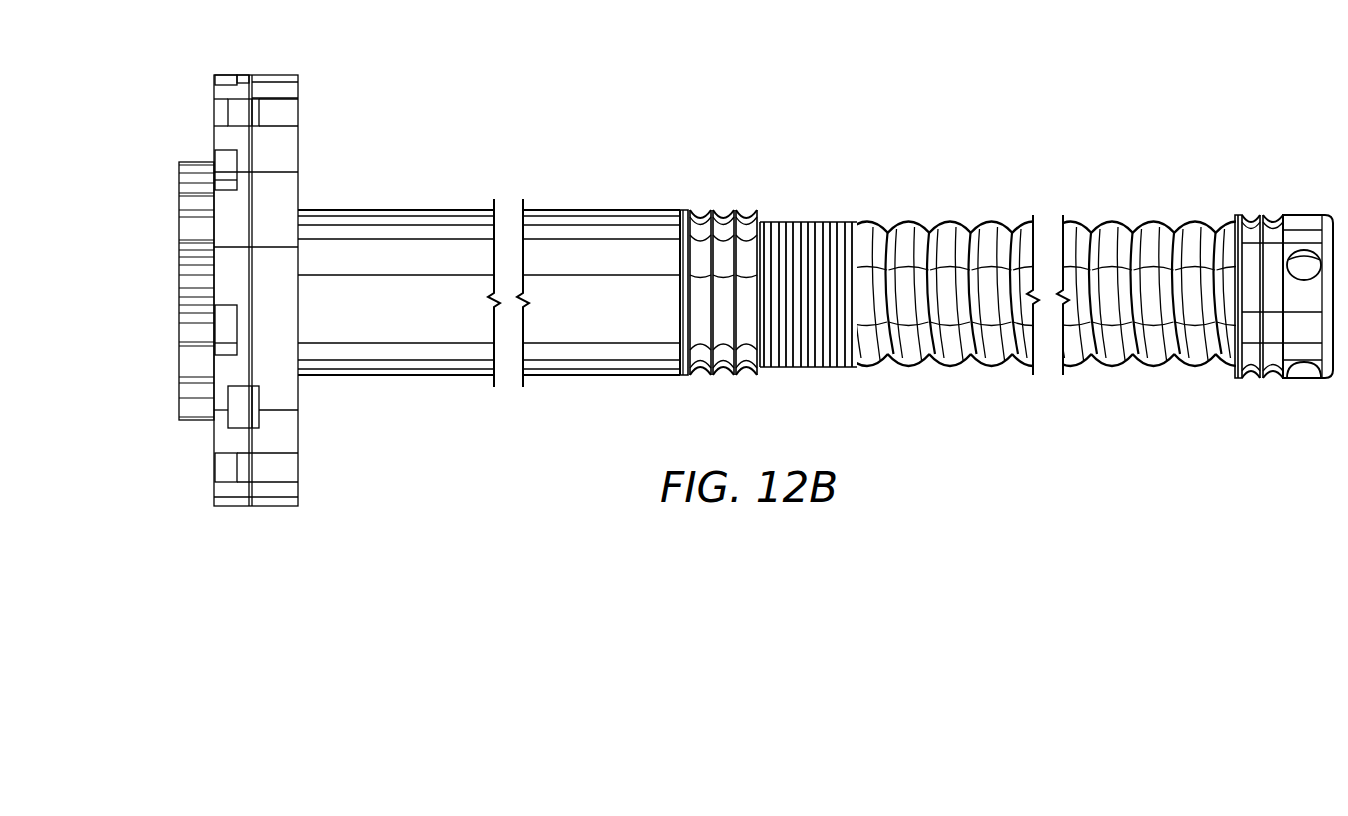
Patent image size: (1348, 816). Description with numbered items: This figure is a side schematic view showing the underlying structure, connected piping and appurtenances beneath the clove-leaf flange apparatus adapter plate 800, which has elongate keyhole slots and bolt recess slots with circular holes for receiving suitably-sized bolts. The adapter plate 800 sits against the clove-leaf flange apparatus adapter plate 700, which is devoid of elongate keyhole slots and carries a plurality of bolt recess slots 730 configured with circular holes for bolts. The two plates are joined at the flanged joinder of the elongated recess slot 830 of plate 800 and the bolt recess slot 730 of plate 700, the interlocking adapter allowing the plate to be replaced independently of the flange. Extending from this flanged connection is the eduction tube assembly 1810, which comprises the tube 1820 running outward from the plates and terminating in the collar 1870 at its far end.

The clove-leaf flange apparatus adapter plate 700 is at (280, 75).
The clove-leaf flange apparatus adapter plate 800 is at (214, 498).
The elongated recess slot 830 is at (234, 117).
The bolt recess slot 730 is at (256, 117).
The eduction tube assembly 1810 is at (424, 192).
The tube 1820 is at (793, 222).
The collar 1870 is at (1305, 378).